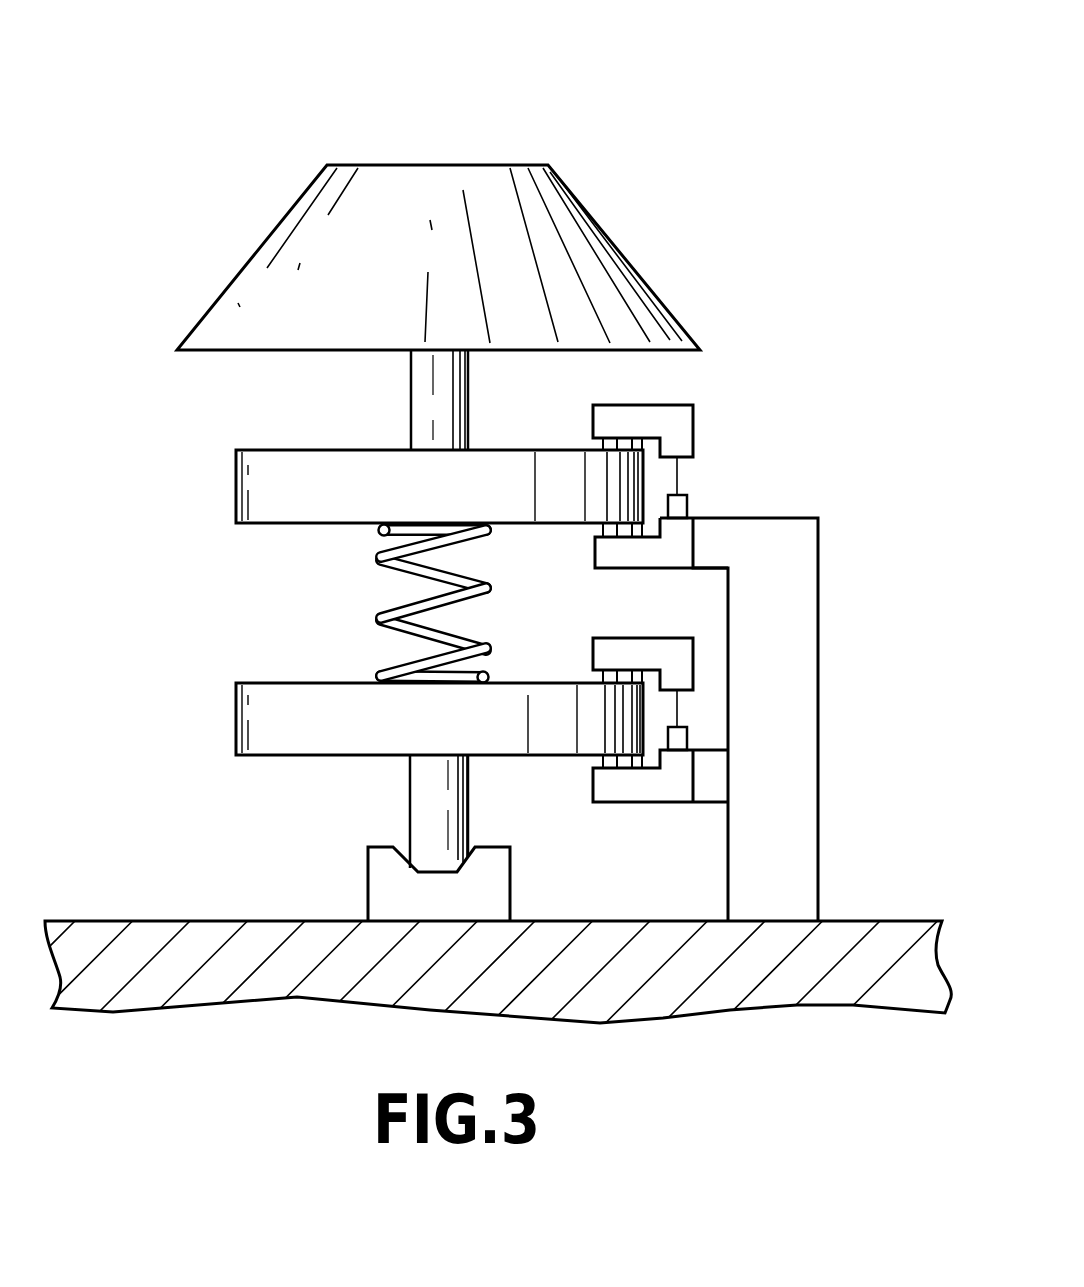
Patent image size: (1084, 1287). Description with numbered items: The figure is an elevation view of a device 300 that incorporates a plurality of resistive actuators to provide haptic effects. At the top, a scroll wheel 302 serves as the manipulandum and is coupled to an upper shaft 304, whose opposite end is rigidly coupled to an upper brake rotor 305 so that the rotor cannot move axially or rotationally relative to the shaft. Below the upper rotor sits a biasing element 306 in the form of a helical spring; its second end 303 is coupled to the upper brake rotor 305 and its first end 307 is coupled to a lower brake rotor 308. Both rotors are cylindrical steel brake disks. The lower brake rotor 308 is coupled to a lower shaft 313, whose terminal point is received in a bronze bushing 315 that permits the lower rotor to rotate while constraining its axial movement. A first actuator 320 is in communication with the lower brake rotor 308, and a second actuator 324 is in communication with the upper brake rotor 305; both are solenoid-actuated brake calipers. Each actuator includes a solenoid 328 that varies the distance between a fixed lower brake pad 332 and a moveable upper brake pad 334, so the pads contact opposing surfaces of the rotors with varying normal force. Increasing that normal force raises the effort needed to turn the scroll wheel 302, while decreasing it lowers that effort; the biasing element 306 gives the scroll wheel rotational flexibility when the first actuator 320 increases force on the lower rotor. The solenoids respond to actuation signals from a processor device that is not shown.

The device 300 is at (335, 121).
The scroll wheel 302 is at (617, 250).
The second end 303 is at (383, 528).
The upper shaft 304 is at (411, 398).
The upper brake rotor 305 is at (236, 486).
The biasing element 306 is at (375, 620).
The first end 307 is at (420, 690).
The lower brake rotor 308 is at (236, 730).
The lower shaft 313 is at (427, 797).
The bushing 315 is at (483, 875).
The first actuator 320 is at (743, 687).
The second actuator 324 is at (722, 437).
The solenoid 328 is at (680, 510).
The lower brake pad 332 is at (617, 752).
The upper brake pad 334 is at (615, 443).